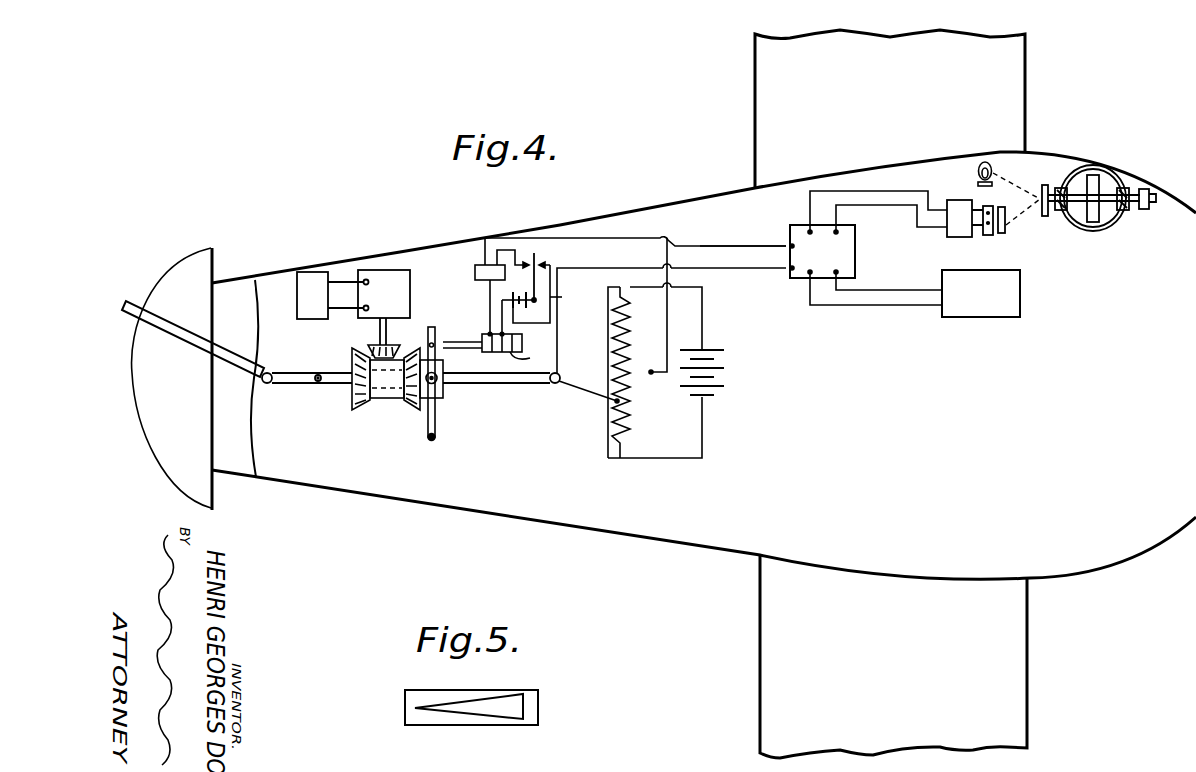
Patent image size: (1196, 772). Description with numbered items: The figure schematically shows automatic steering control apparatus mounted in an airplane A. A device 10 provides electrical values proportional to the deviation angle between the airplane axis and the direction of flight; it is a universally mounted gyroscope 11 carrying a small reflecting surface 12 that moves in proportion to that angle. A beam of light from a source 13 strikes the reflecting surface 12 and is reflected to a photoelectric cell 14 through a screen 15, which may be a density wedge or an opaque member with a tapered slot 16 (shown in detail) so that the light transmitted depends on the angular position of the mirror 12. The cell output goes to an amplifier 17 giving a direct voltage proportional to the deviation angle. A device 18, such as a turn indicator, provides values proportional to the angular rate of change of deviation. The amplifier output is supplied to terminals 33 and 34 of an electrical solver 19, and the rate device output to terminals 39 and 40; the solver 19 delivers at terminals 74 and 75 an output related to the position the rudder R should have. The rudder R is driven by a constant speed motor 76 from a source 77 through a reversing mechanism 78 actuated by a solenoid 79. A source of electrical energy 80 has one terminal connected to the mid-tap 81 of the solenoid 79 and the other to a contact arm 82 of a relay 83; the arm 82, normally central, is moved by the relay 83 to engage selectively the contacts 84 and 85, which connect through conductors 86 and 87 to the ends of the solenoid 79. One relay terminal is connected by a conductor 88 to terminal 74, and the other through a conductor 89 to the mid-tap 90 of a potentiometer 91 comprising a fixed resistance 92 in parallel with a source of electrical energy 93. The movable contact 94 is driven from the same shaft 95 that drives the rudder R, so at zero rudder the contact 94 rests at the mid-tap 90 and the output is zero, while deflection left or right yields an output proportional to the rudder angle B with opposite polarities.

In FIG. 4, the device for providing electrical values proportional to the deviation angle 10 is at (1034, 170).
In FIG. 4, the gyroscope 11 is at (1110, 182).
In FIG. 4, the reflecting surface 12 is at (1048, 186).
In FIG. 4, the light source 13 is at (988, 161).
In FIG. 4, the photoelectric cell 14 is at (987, 236).
In FIG. 4, the screen 15 is at (1007, 228).
In FIG. 5, the screen 15 is at (538, 694).
In FIG. 5, the tapered slot 16 is at (463, 714).
In FIG. 4, the amplifier 17 is at (957, 200).
In FIG. 4, the device for providing electrical values proportional to the angular rate of chang 18 is at (970, 318).
In FIG. 4, the electrical solver 19 is at (855, 250).
In FIG. 4, the solver terminal 33 is at (808, 230).
In FIG. 4, the solver terminal 34 is at (838, 232).
In FIG. 4, the solver terminal 39 is at (808, 274).
In FIG. 4, the solver terminal 40 is at (838, 272).
In FIG. 4, the solver output terminal 74 is at (790, 245).
In FIG. 4, the solver output terminal 75 is at (790, 269).
In FIG. 4, the constant speed motor 76 is at (383, 270).
In FIG. 4, the source 77 is at (308, 272).
In FIG. 4, the reversing mechanism 78 is at (386, 400).
In FIG. 4, the solenoid 79 is at (530, 356).
In FIG. 4, the source of electrical energy 80 is at (511, 300).
In FIG. 4, the mid-tap 81 is at (498, 338).
In FIG. 4, the contact arm 82 is at (536, 253).
In FIG. 4, the relay 83 is at (483, 265).
In FIG. 4, the contact 84 is at (515, 262).
In FIG. 4, the contact 85 is at (550, 262).
In FIG. 4, the conductor 86 is at (500, 298).
In FIG. 4, the conductor 87 is at (556, 298).
In FIG. 4, the conductor 88 is at (718, 246).
In FIG. 4, the conductor 89 is at (624, 238).
In FIG. 4, the mid-tap 90 is at (649, 372).
In FIG. 4, the potentiometer 91 is at (685, 438).
In FIG. 4, the fixed resistance 92 is at (636, 401).
In FIG. 4, the source of electrical energy 93 is at (726, 373).
In FIG. 4, the movable contact 94 is at (614, 403).
In FIG. 4, the shaft 95 is at (477, 384).
In FIG. 4, the airplane A is at (664, 394).
In FIG. 4, the rudder angle B is at (172, 345).
In FIG. 4, the rudder R is at (140, 300).